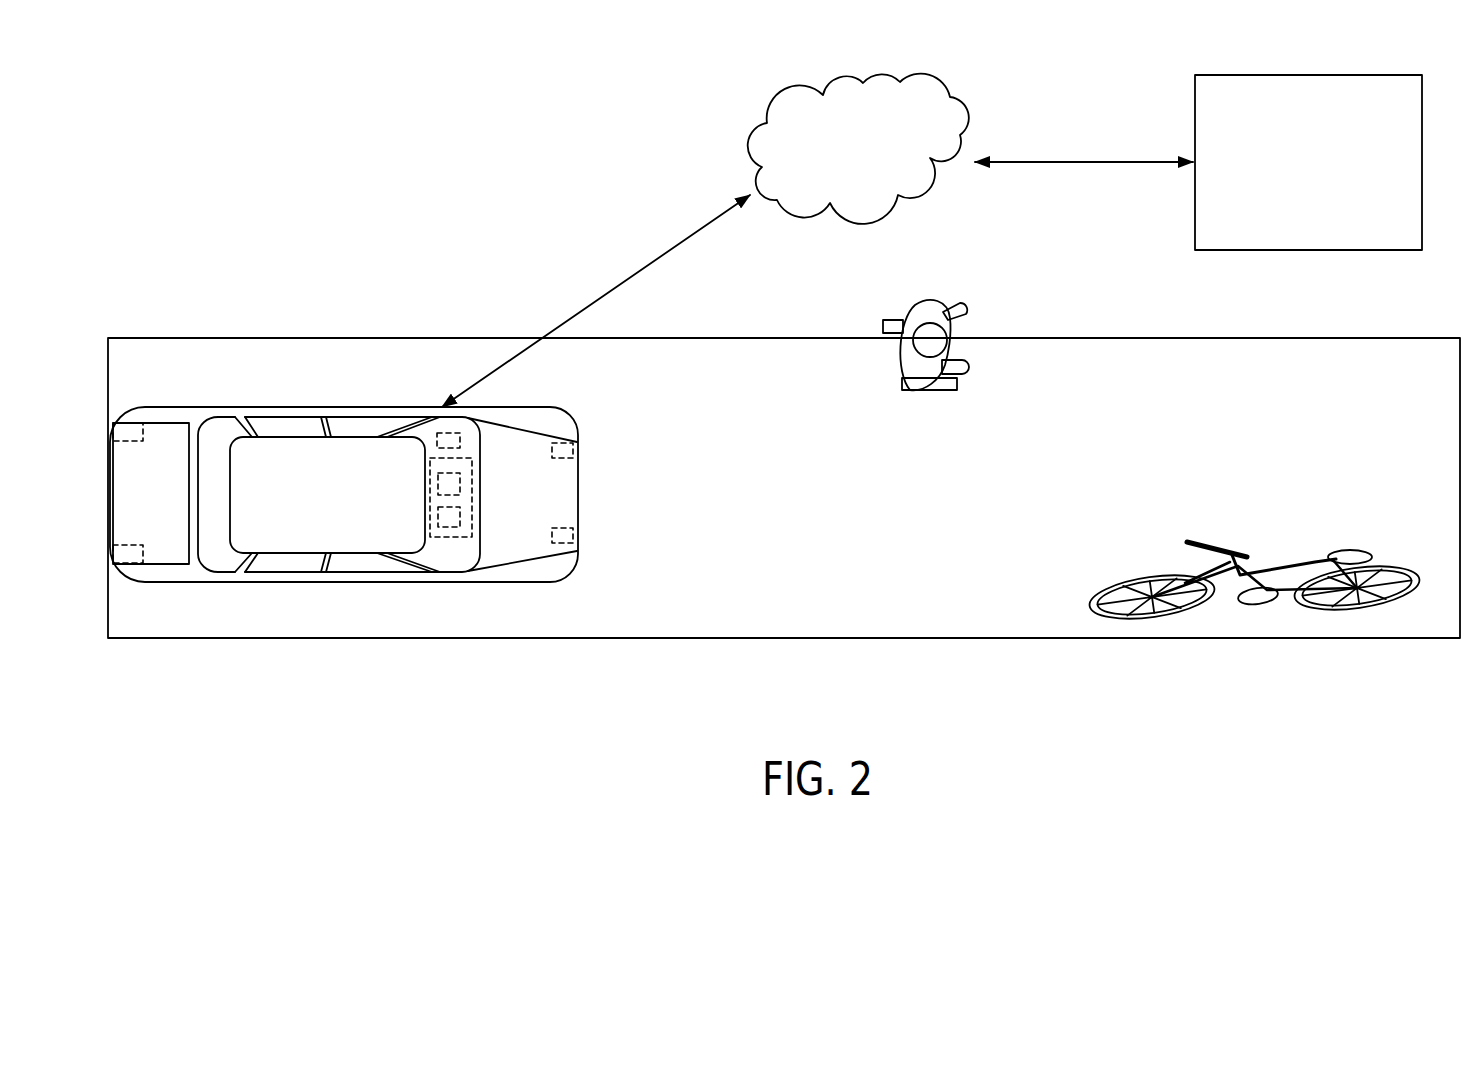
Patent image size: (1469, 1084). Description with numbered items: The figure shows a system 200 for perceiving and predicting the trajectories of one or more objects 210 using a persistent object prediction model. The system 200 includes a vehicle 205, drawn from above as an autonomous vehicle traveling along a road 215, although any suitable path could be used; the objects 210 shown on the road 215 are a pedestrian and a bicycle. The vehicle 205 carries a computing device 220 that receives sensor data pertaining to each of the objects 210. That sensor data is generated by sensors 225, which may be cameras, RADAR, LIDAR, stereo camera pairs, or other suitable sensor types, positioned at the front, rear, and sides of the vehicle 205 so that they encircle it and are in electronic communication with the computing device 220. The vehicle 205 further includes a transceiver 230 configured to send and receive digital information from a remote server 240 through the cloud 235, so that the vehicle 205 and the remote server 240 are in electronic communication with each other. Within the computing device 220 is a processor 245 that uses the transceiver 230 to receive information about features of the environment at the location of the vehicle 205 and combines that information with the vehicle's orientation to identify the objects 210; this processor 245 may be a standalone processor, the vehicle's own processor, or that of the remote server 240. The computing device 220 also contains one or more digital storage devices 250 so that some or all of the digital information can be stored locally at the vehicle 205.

The system 200 is at (340, 155).
The vehicle 205 is at (222, 408).
The objects 210 is at (932, 392).
The road 215 is at (287, 620).
The computing device 220 is at (478, 475).
The sensors 225 is at (138, 424).
The transceiver 230 is at (465, 440).
The cloud 235 is at (874, 165).
The remote server 240 is at (1331, 180).
The processor 245 is at (470, 522).
The digital storage devices 250 is at (470, 488).